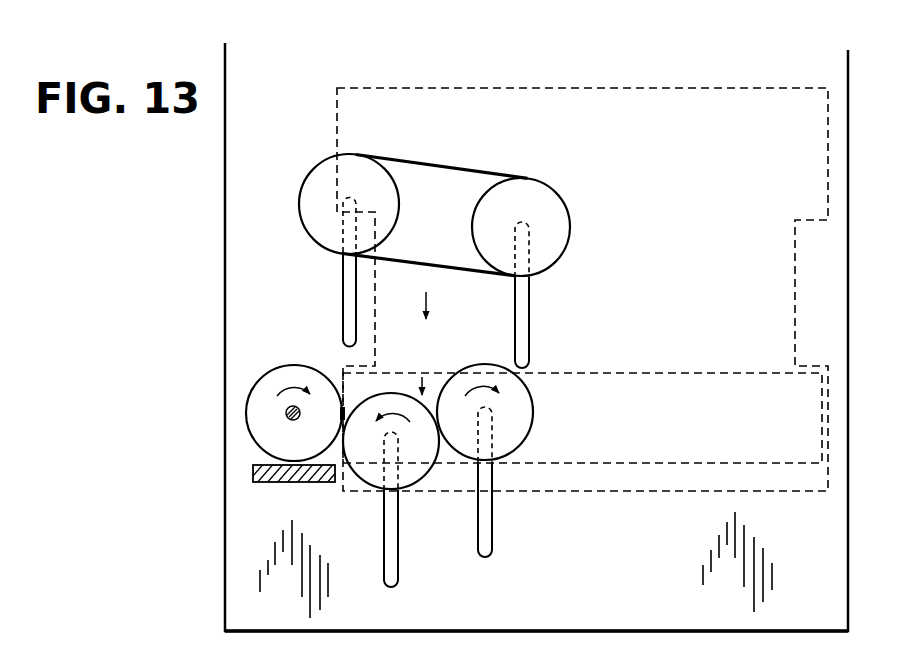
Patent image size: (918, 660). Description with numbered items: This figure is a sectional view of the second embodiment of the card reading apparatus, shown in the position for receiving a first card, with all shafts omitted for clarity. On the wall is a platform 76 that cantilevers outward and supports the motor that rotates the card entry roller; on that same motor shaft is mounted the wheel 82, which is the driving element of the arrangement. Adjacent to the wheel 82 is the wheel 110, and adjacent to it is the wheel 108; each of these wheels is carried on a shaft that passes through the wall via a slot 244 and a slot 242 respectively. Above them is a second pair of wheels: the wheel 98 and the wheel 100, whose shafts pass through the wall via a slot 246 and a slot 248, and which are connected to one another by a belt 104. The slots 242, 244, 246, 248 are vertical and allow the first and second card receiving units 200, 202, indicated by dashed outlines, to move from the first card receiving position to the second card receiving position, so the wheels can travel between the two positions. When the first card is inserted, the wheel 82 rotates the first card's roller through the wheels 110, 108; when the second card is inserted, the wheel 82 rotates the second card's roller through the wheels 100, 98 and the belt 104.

The second card receiving unit 202 is at (649, 84).
The first card receiving unit 200 is at (680, 367).
The wheel 100 is at (317, 182).
The belt 104 is at (449, 165).
The wheel 98 is at (563, 242).
The slot 248 is at (350, 300).
The slot 246 is at (523, 318).
The wheel 82 is at (290, 378).
The platform 76 is at (278, 485).
The wheel 110 is at (370, 478).
The wheel 108 is at (530, 420).
The slot 244 is at (396, 578).
The slot 242 is at (490, 543).